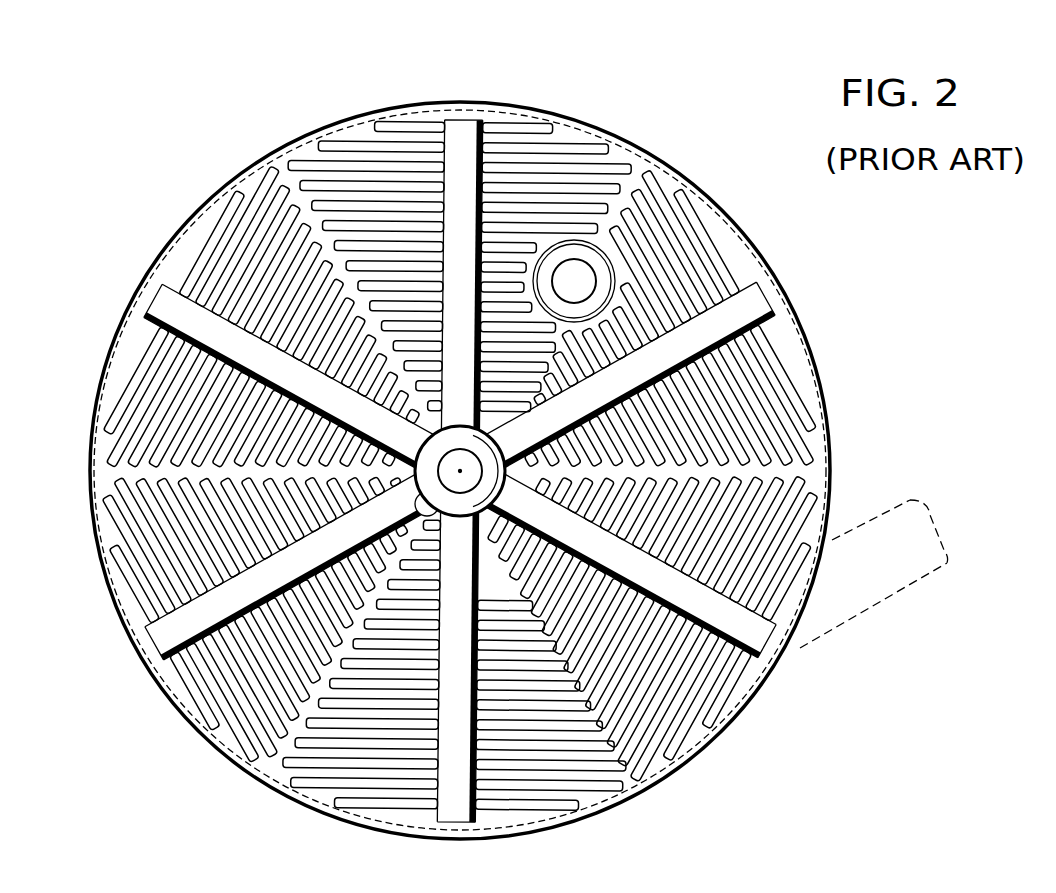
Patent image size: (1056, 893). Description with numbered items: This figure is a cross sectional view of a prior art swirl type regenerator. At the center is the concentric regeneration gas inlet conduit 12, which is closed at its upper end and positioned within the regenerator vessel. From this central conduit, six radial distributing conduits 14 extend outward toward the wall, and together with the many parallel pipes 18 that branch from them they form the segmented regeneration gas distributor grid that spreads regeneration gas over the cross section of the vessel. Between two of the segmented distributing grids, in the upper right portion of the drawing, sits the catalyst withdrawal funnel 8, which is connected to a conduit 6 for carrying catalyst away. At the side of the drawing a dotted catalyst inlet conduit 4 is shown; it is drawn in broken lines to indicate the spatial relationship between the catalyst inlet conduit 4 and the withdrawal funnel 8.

The catalyst inlet conduit 4 is at (930, 499).
The conduit 6 is at (575, 240).
The catalyst withdrawal funnel 8 is at (569, 240).
The concentric regeneration gas inlet conduit 12 is at (416, 513).
The distributing conduits 14 is at (465, 130).
The pipes 18 is at (316, 168).